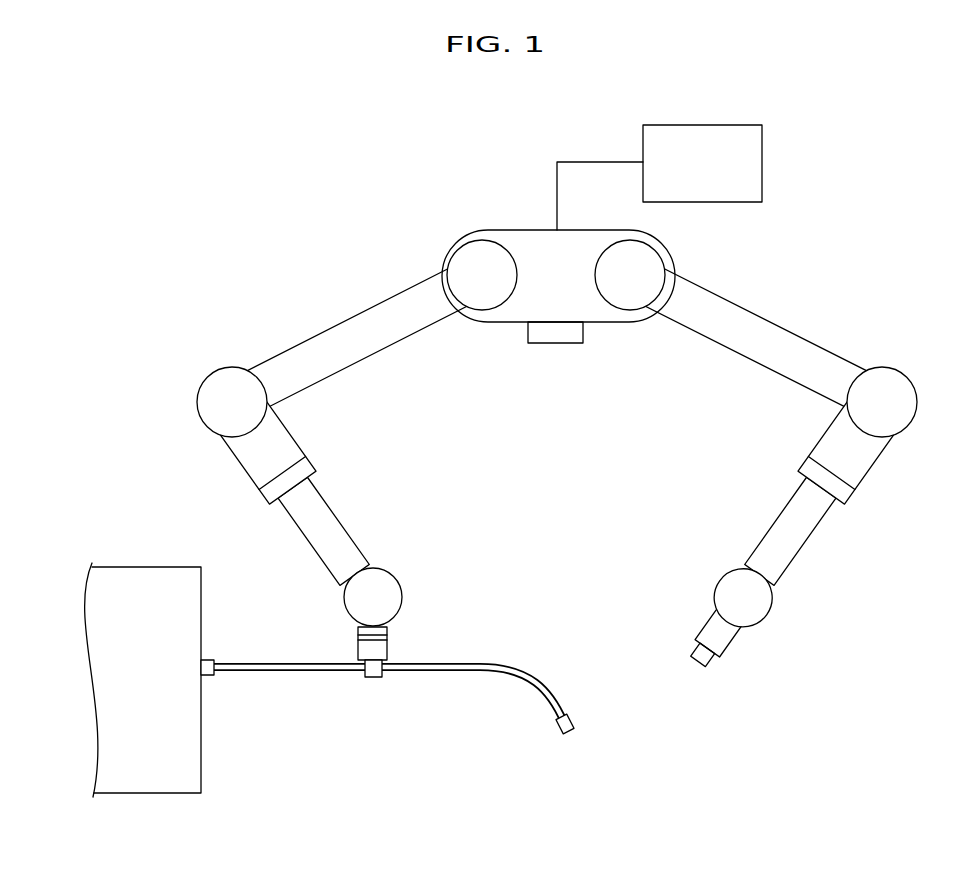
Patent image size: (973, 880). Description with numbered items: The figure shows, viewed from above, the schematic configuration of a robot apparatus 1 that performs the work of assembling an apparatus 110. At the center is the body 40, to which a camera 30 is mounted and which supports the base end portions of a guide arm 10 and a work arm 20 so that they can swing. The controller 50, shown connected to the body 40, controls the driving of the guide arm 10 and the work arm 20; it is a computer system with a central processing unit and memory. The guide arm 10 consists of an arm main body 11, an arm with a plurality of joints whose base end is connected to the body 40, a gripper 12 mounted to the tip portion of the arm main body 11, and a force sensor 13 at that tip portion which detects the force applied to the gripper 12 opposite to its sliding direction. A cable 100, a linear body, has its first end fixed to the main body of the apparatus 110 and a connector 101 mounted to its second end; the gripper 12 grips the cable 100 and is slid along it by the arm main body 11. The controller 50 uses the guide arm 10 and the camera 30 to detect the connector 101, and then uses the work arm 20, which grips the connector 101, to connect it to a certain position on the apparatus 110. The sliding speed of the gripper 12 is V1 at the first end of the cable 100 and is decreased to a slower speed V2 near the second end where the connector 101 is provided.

The robot apparatus 1 is at (190, 124).
The guide arm 10 is at (206, 364).
The arm main body 11 is at (336, 367).
The gripper 12 is at (372, 668).
The force sensor 13 is at (388, 640).
The work arm 20 is at (900, 364).
The camera 30 is at (557, 343).
The body 40 is at (497, 230).
The controller 50 is at (703, 125).
The cable 100 is at (260, 675).
The connector 101 is at (574, 724).
The apparatus 110 is at (128, 567).
The sliding speed at the first end V1 is at (222, 661).
The sliding speed at the second end V2 is at (562, 716).